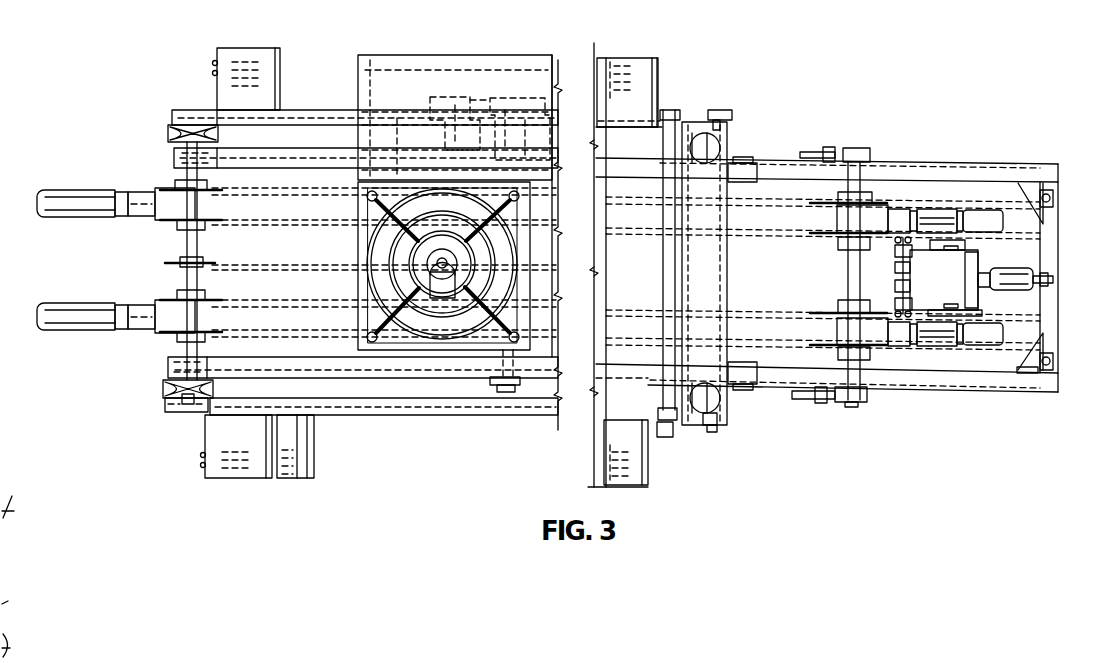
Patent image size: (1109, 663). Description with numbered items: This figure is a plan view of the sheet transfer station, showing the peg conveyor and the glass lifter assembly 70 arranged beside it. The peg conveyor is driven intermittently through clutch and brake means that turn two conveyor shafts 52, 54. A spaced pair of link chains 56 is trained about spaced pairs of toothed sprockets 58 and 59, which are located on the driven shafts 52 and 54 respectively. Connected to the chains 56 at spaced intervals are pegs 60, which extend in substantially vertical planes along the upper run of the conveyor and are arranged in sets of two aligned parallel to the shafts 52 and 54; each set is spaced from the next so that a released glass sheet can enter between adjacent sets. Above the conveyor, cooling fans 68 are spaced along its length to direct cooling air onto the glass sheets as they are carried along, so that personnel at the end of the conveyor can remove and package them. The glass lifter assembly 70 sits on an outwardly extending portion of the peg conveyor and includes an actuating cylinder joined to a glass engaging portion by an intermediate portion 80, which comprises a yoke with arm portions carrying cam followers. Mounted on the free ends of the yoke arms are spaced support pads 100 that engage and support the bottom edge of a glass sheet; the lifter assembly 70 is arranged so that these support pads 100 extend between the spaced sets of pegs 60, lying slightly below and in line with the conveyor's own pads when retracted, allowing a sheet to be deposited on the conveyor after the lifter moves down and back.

The conveyor shaft 52 is at (194, 380).
The conveyor shaft 54 is at (858, 193).
The link chains 56 is at (663, 228).
The toothed sprockets 58 is at (213, 300).
The toothed sprockets 59 is at (833, 234).
The pegs 60 is at (982, 210).
The cooling fans 68 is at (392, 271).
The glass lifter assembly 70 is at (1011, 297).
The intermediate portion 80 is at (957, 264).
The support pads 100 is at (897, 304).